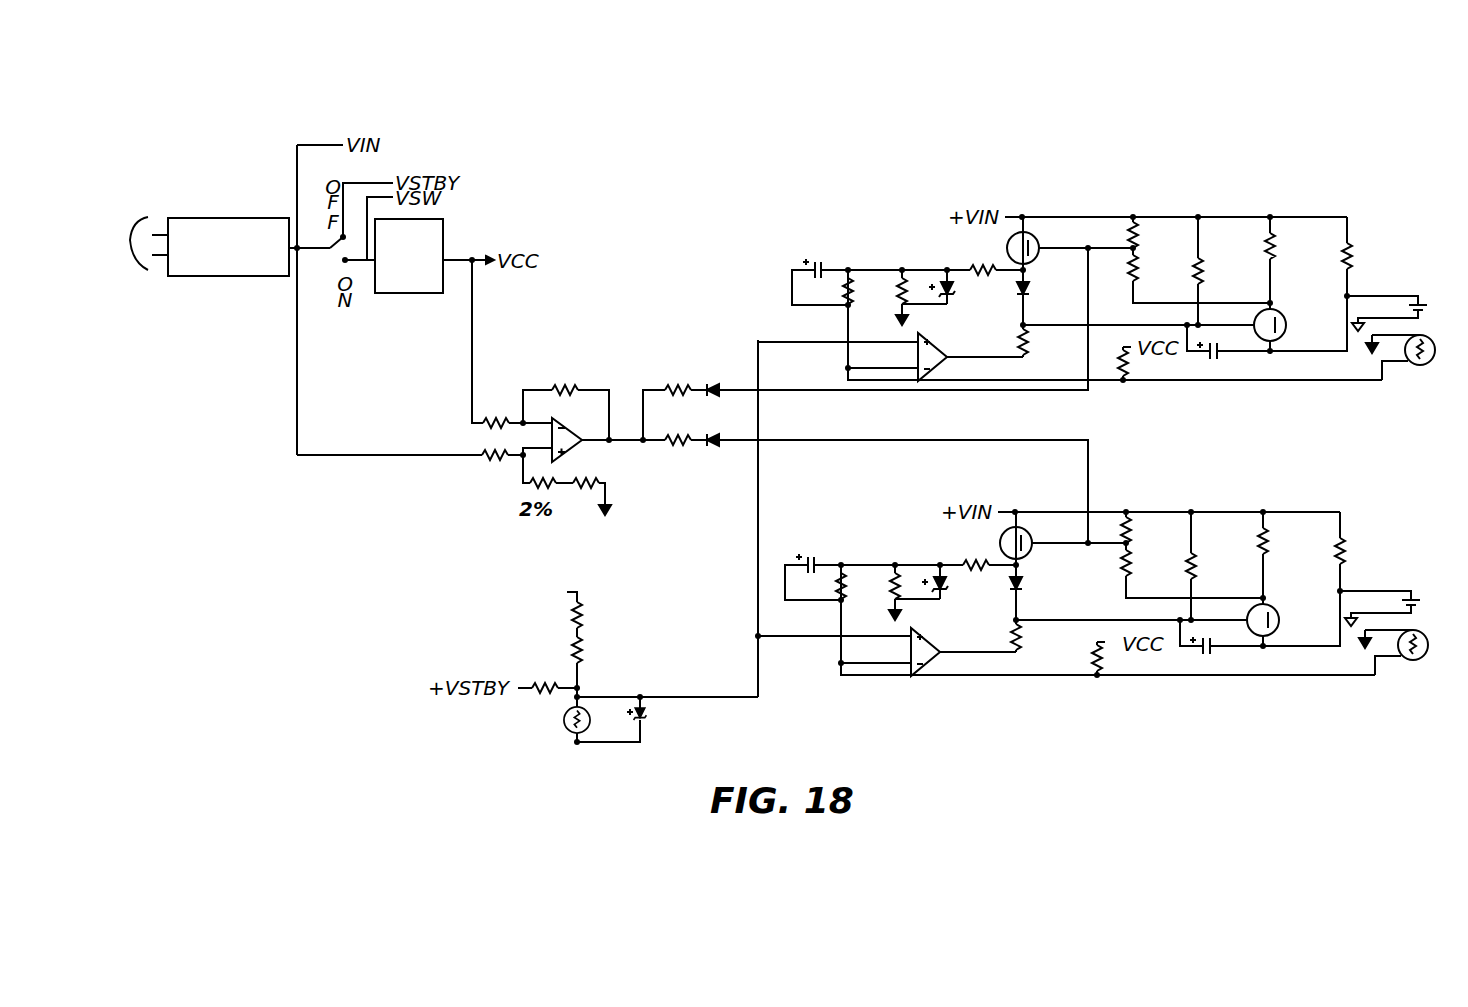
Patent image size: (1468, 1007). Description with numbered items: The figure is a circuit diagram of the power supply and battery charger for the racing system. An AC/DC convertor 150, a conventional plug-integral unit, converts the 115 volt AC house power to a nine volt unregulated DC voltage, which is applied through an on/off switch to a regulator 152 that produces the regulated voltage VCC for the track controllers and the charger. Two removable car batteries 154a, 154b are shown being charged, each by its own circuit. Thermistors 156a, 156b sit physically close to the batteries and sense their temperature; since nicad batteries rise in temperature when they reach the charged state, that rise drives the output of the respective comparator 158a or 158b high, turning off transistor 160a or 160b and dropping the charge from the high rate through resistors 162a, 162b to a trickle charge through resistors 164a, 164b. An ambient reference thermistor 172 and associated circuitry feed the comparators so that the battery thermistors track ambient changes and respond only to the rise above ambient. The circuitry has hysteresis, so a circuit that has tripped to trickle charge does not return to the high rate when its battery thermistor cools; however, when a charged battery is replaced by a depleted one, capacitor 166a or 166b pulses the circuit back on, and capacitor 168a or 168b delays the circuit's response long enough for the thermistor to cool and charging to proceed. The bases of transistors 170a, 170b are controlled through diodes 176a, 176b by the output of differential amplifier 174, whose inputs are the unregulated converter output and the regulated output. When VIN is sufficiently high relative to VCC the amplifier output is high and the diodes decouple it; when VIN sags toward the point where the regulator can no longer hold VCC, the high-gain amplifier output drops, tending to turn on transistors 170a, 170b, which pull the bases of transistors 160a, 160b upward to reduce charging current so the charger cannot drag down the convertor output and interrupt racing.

The volt AC house power 115 is at (123, 249).
The AC/DC convertor 150 is at (232, 218).
The regulator 152 is at (447, 242).
The battery 154a is at (1428, 300).
The battery 154b is at (1388, 587).
The thermistor 156a is at (1430, 370).
The thermistor 156b is at (1406, 666).
The comparator 158a is at (944, 358).
The comparator 158b is at (963, 686).
The transistor 160a is at (1282, 316).
The transistor 160b is at (1289, 604).
The resistor 162a is at (1277, 250).
The resistor 162b is at (1288, 539).
The resistor 164a is at (1353, 255).
The resistor 164b is at (1376, 545).
The capacitor 166a is at (1215, 362).
The capacitor 166b is at (1211, 679).
The capacitor 168a is at (840, 250).
The capacitor 168b is at (826, 555).
The transistor 170a is at (1040, 236).
The transistor 170b is at (1063, 511).
The thermistor 172 is at (570, 730).
The amplifier 174 is at (567, 428).
The diode 176a is at (718, 380).
The diode 176b is at (717, 452).